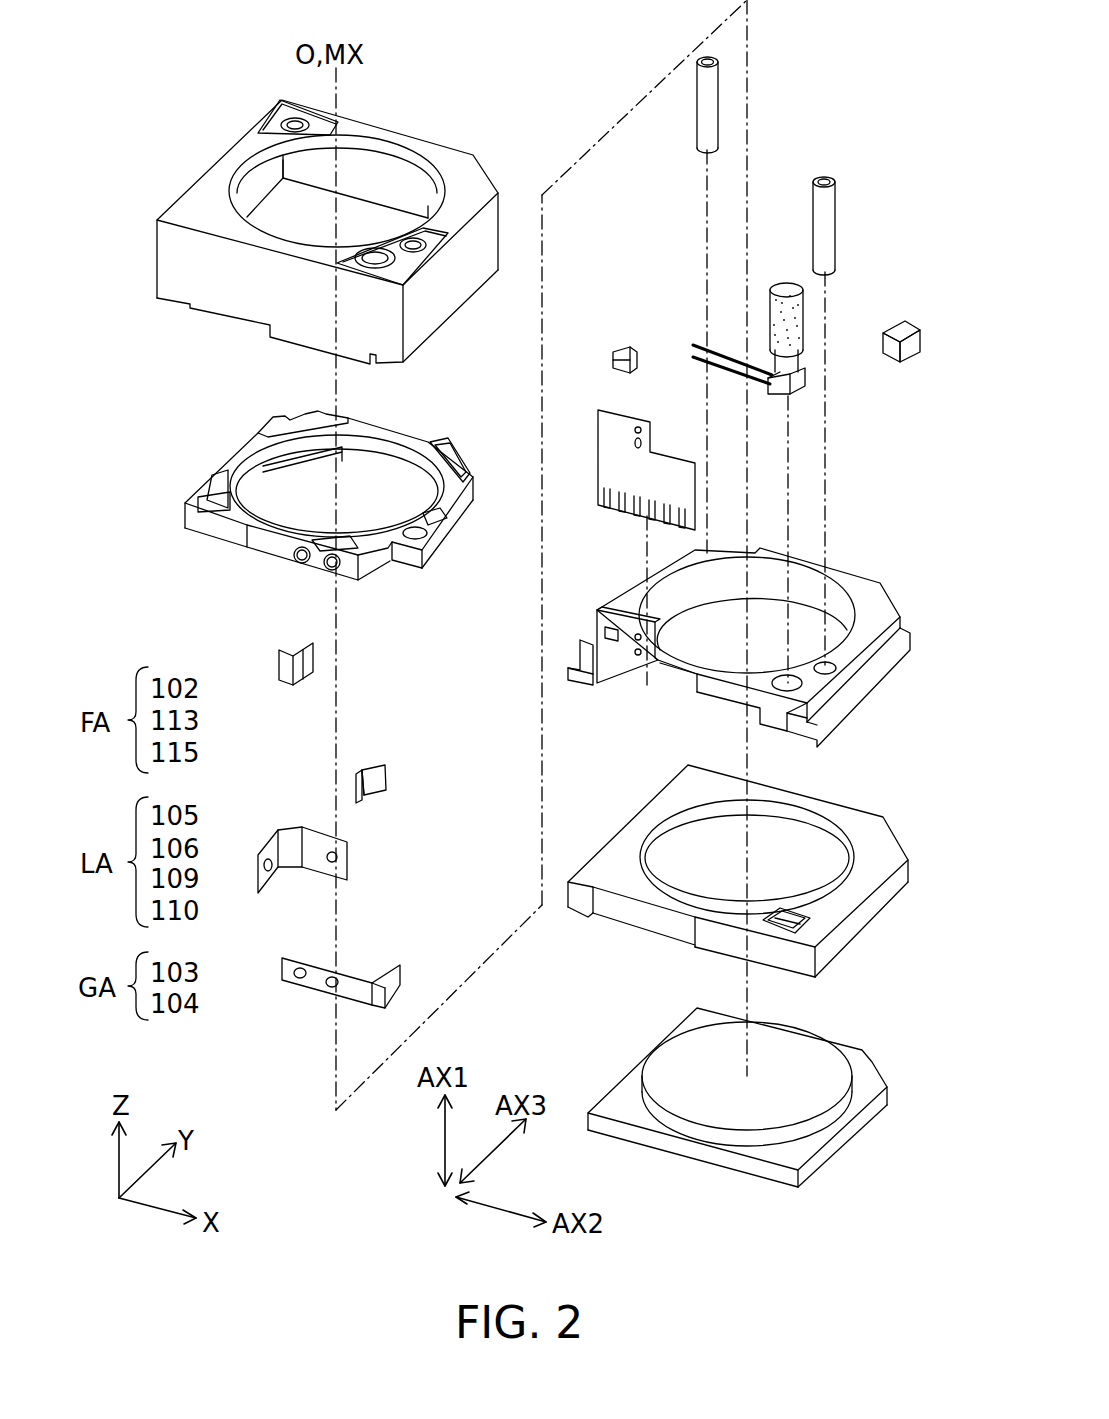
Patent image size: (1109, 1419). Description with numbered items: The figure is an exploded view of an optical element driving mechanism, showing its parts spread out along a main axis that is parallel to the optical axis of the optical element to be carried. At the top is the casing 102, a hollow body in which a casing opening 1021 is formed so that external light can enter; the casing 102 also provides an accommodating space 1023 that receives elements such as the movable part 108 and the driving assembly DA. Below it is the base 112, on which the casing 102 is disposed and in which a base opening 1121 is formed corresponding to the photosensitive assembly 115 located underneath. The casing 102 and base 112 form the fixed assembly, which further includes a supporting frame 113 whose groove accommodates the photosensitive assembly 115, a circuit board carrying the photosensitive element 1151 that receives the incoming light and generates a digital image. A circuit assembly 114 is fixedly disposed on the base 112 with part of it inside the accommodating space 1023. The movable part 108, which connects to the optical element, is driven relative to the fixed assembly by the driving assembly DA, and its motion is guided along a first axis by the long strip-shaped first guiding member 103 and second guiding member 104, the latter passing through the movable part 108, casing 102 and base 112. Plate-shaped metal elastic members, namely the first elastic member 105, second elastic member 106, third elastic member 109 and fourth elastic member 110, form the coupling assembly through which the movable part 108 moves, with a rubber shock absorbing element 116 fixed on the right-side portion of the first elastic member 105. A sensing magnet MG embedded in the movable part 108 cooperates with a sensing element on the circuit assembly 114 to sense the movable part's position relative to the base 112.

The casing 102 is at (372, 122).
The casing opening 1021 is at (245, 163).
The accommodating space 1023 is at (405, 178).
The first guiding member 103 is at (703, 138).
The second guiding member 104 is at (825, 178).
The first elastic member 105 is at (352, 988).
The second elastic member 106 is at (293, 827).
The movable part 108 is at (412, 440).
The third elastic member 109 is at (372, 772).
The fourth elastic member 110 is at (287, 650).
The base 112 is at (853, 573).
The base opening 1121 is at (693, 666).
The supporting frame 113 is at (853, 812).
The circuit assembly 114 is at (626, 415).
The photosensitive assembly 115 is at (852, 1050).
The photosensitive element 1151 is at (663, 1062).
The shock absorbing element 116 is at (900, 330).
The sensing magnet MG is at (622, 350).
The driving assembly DA is at (800, 388).